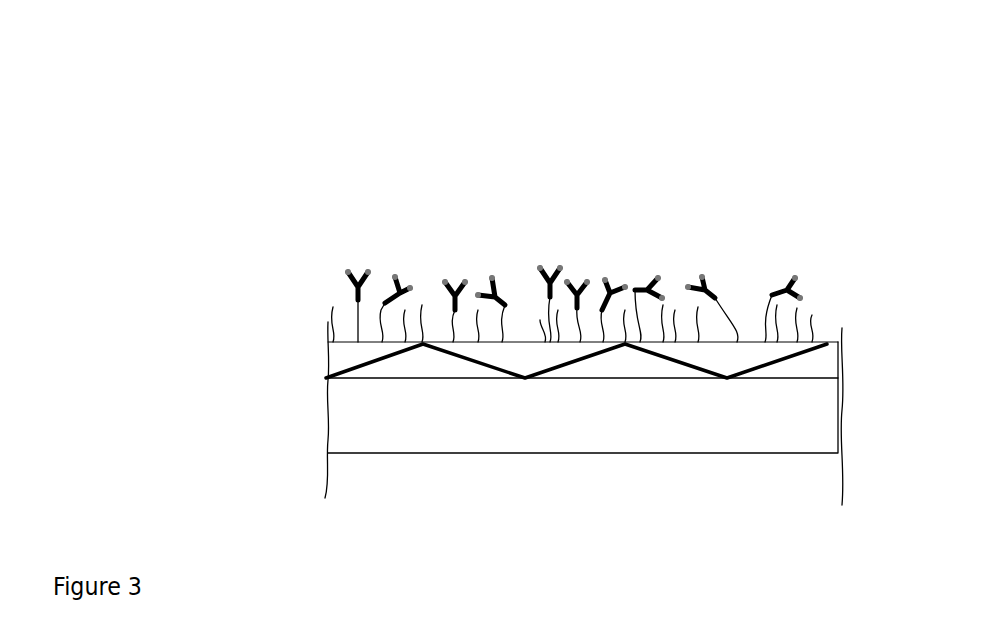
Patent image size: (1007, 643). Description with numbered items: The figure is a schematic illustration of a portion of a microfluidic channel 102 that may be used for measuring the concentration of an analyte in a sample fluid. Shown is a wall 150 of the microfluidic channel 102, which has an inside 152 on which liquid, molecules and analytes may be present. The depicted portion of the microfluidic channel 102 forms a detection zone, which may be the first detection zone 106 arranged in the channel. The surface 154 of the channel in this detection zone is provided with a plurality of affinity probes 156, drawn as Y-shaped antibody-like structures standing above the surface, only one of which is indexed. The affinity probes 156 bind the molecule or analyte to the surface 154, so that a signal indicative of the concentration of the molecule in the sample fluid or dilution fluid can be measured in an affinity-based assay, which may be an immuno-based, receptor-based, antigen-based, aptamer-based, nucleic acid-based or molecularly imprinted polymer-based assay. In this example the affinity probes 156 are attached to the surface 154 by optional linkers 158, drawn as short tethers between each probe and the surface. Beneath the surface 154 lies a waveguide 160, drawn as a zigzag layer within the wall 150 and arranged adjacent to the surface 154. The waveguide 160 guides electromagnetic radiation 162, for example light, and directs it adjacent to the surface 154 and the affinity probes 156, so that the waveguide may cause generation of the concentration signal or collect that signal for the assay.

The microfluidic channel 102 is at (758, 455).
The first detection zone 106 is at (812, 105).
The wall 150 is at (387, 453).
The inside 152 is at (267, 228).
The surface 154 is at (826, 343).
The affinity probes 156 is at (702, 277).
The linkers 158 is at (540, 320).
The waveguide 160 is at (337, 362).
The electromagnetic radiation 162 is at (812, 343).